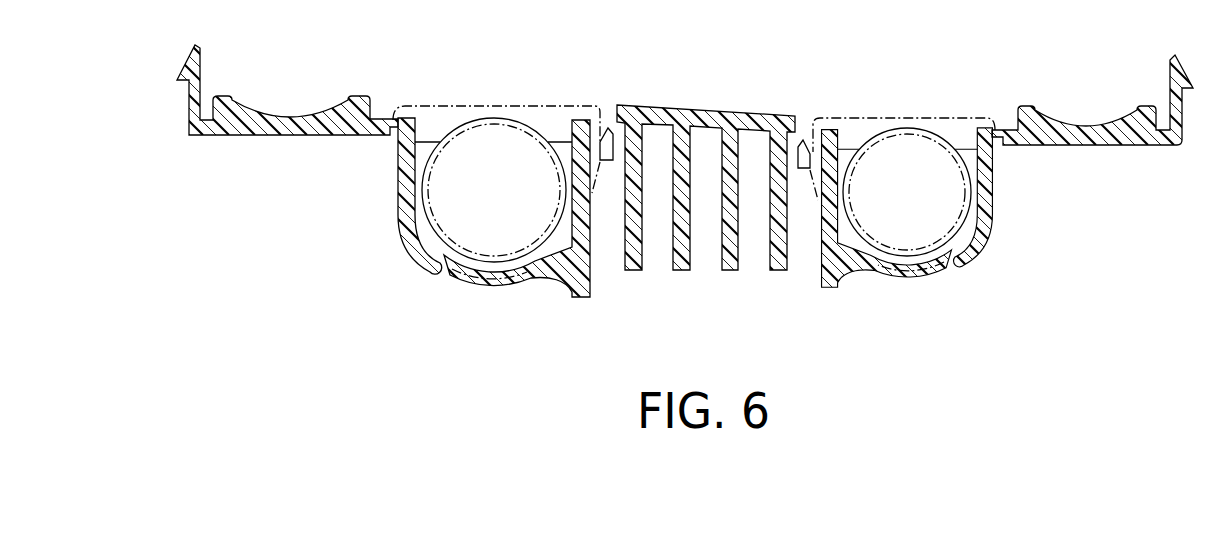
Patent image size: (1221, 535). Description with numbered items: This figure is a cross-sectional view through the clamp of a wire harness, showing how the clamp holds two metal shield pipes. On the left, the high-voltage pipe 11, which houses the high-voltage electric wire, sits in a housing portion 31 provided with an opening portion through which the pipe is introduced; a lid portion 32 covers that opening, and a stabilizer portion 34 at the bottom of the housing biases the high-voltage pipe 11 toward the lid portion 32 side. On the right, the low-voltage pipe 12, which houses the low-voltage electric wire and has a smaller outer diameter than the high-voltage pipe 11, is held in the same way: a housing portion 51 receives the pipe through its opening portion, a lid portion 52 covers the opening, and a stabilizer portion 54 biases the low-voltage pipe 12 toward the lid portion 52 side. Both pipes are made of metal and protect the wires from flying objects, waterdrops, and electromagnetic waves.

The high-voltage pipe 11 is at (532, 140).
The low-voltage pipe 12 is at (947, 165).
The housing portion 31 is at (398, 166).
The lid portion 32 is at (428, 100).
The stabilizer portion 34 is at (451, 276).
The housing portion 51 is at (992, 191).
The lid portion 52 is at (975, 112).
The stabilizer portion 54 is at (944, 268).